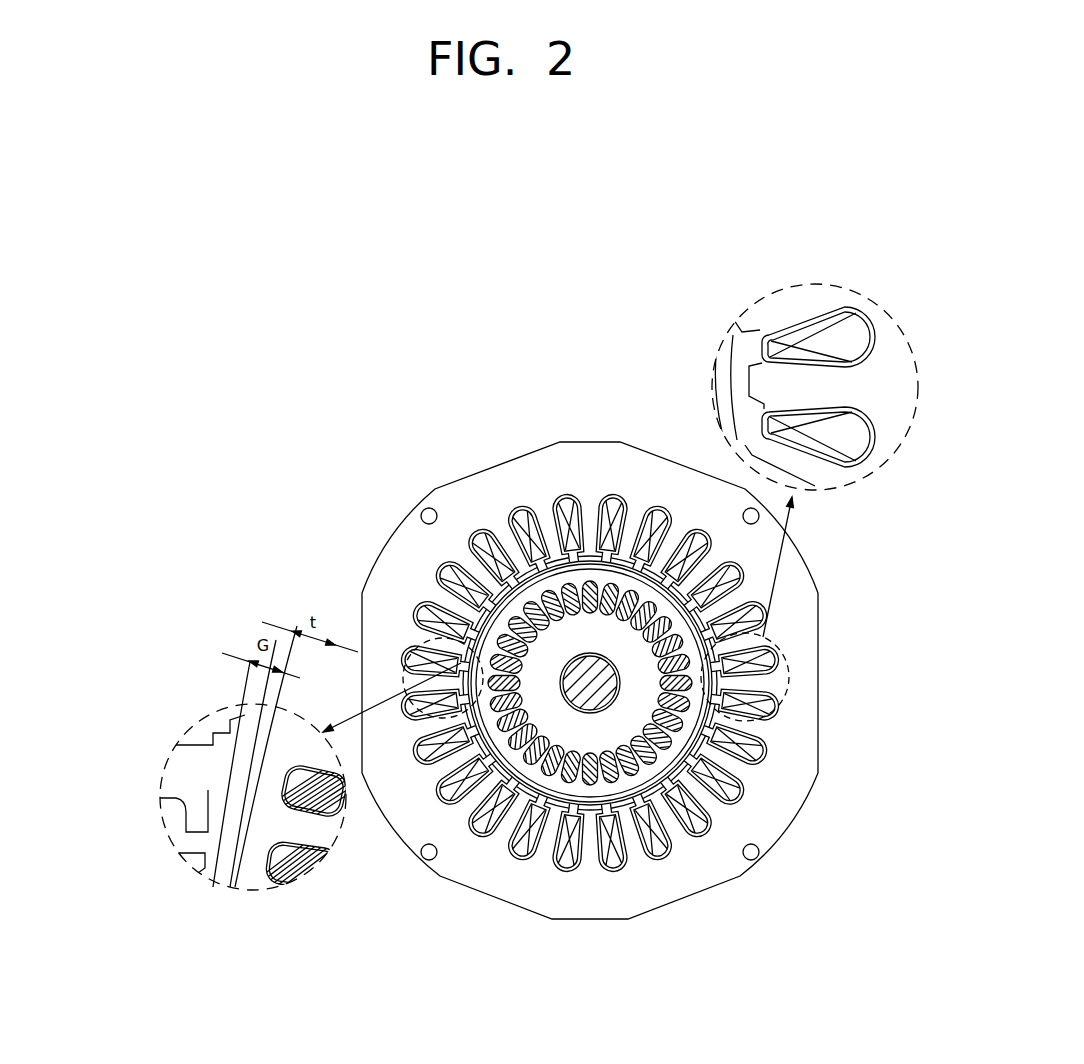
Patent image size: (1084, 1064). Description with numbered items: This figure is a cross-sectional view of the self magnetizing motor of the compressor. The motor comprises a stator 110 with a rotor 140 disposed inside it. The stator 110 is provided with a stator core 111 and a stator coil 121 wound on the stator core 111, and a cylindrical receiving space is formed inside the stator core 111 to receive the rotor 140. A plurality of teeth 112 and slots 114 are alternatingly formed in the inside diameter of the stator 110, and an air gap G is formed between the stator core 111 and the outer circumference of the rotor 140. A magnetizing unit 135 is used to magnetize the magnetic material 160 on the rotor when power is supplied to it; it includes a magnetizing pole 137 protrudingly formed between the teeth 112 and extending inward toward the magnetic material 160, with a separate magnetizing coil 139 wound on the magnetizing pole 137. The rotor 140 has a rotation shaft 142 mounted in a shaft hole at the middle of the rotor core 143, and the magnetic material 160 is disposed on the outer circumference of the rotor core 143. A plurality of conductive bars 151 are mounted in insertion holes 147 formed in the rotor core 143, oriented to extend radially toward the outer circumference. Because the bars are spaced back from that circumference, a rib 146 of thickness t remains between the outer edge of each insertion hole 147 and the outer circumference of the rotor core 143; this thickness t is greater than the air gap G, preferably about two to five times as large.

The stator 110 is at (573, 387).
The stator core 111 is at (516, 478).
The teeth 112 is at (480, 532).
The slots 114 is at (495, 551).
The stator coil 121 is at (564, 490).
The magnetizing unit 135 is at (800, 232).
The magnetizing pole 137 is at (761, 385).
The magnetizing coil 139 is at (795, 332).
The rotor 140 is at (530, 960).
The rotation shaft 142 is at (572, 706).
The rotor core 143 is at (588, 740).
The rib 146 is at (267, 782).
The insertion hole 147 is at (302, 813).
The conductive bars 151 is at (609, 828).
The magnetic material 160 is at (630, 793).